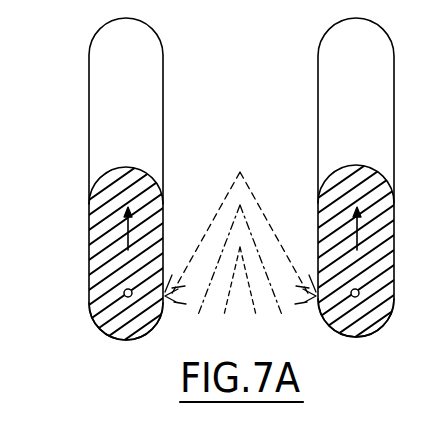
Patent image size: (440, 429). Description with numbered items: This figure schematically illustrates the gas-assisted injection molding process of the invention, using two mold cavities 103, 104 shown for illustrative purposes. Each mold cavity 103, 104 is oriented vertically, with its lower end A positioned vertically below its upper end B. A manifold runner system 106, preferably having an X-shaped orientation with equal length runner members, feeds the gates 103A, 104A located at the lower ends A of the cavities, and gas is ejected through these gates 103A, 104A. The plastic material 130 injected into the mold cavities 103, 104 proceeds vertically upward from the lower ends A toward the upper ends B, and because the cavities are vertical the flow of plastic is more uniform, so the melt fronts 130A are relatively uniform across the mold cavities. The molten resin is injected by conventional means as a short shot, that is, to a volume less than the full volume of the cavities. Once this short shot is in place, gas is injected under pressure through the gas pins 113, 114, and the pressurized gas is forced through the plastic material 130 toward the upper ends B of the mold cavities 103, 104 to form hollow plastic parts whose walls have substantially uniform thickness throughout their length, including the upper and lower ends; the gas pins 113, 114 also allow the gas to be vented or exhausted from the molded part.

The mold cavity 103 is at (159, 80).
The mold cavity 104 is at (317, 92).
The plastic material 130 is at (96, 266).
The melt front 130A is at (128, 167).
The manifold runner system 106 is at (240, 174).
The gate 103A is at (165, 300).
The gate 104A is at (314, 300).
The gas pin 113 is at (105, 328).
The gas pin 114 is at (343, 336).
The lower end A is at (135, 336).
The upper end B is at (170, 52).